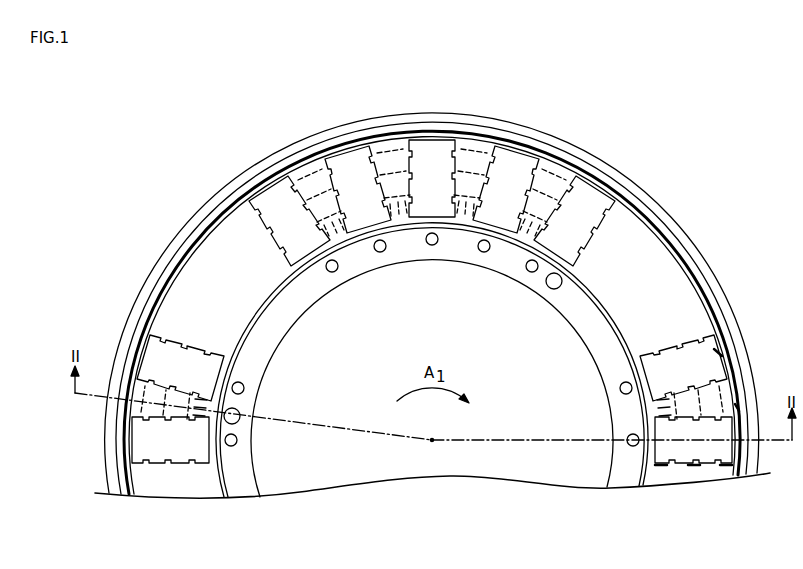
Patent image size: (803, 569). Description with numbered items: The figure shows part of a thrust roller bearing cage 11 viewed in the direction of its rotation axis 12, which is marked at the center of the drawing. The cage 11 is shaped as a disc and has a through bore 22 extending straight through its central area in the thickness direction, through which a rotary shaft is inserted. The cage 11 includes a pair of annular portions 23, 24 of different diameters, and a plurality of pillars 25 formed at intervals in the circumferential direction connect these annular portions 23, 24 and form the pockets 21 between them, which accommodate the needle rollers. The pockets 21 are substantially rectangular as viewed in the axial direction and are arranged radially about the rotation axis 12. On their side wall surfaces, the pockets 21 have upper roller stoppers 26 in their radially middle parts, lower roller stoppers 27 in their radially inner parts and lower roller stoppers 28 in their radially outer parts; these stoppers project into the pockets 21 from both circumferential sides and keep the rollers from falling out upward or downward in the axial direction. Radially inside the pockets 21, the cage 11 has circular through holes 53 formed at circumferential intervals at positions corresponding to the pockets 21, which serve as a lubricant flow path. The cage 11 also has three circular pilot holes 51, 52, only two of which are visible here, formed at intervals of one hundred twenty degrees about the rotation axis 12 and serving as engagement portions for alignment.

The thrust roller bearing cage 11 is at (633, 113).
The rotation axis 12 is at (432, 443).
The pocket 21 is at (293, 180).
The through bore 22 is at (345, 465).
The annular portion 23 is at (235, 485).
The annular portion 24 is at (117, 488).
The pillar 25 is at (137, 410).
The upper roller stopper 26 is at (718, 352).
The lower roller stopper 27 is at (648, 412).
The lower roller stopper 28 is at (737, 407).
The pilot hole 51 is at (240, 418).
The pilot hole 52 is at (563, 281).
The through hole 53 is at (374, 246).